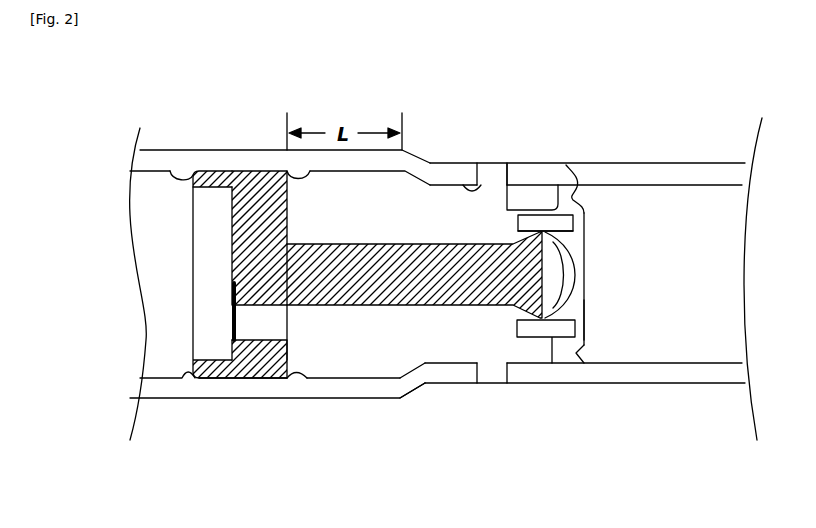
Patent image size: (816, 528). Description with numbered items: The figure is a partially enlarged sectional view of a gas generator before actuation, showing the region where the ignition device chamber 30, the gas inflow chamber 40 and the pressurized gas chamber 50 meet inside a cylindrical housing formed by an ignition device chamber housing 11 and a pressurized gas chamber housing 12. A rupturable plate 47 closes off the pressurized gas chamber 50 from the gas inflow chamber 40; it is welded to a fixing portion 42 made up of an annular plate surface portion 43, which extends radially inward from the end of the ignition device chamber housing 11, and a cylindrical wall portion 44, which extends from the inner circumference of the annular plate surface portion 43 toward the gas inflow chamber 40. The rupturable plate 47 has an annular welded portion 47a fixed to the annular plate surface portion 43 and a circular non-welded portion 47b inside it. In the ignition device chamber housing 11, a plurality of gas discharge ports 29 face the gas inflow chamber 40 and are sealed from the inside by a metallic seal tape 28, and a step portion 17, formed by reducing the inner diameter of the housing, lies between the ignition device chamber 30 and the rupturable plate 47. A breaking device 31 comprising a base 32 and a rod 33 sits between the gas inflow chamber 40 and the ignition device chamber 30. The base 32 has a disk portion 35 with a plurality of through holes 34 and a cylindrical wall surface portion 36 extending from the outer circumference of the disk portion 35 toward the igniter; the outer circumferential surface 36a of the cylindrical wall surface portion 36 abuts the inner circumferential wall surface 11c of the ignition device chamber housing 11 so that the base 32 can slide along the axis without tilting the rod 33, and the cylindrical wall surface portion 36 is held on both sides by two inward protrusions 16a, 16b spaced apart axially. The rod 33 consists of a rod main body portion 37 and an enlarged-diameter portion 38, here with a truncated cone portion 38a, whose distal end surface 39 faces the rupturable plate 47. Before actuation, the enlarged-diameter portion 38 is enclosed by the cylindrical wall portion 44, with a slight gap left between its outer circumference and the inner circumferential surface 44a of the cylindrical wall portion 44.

The ignition device chamber housing 11 is at (179, 385).
The inner circumferential wall surface 11c is at (353, 372).
The pressurized gas chamber housing 12 is at (710, 170).
The protrusion 16a is at (190, 182).
The protrusion 16b is at (300, 180).
The step portion 17 is at (417, 366).
The metallic seal tape 28 is at (463, 186).
The gas discharge ports 29 is at (490, 175).
The ignition device chamber 30 is at (145, 273).
The breaking device 31 is at (367, 274).
The base 32 is at (265, 356).
The rod 33 is at (292, 285).
The through holes 34 is at (258, 313).
The disk portion 35 is at (236, 352).
The cylindrical wall surface portion 36 is at (238, 378).
The outer circumferential surface 36a is at (265, 380).
The rod main body portion 37 is at (402, 258).
The enlarged-diameter portion 38 is at (530, 407).
The truncated cone portion 38a is at (518, 312).
The distal end surface 39 is at (546, 312).
The gas inflow chamber 40 is at (362, 211).
The fixing portion 42 is at (603, 205).
The annular plate surface portion 43 is at (572, 192).
The cylindrical wall portion 44 is at (584, 238).
The inner circumferential surface 44a is at (550, 235).
The rupturable plate 47 is at (629, 286).
The annular welded portion 47a is at (585, 325).
The circular non-welded portion 47b is at (555, 275).
The pressurized gas chamber 50 is at (705, 266).